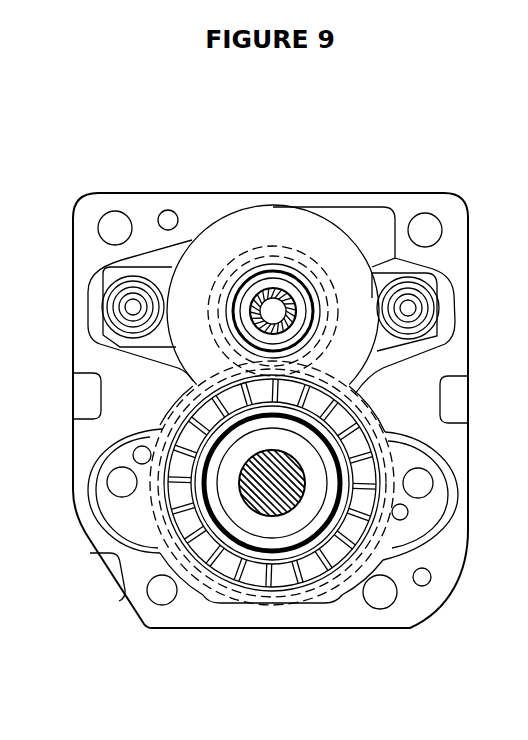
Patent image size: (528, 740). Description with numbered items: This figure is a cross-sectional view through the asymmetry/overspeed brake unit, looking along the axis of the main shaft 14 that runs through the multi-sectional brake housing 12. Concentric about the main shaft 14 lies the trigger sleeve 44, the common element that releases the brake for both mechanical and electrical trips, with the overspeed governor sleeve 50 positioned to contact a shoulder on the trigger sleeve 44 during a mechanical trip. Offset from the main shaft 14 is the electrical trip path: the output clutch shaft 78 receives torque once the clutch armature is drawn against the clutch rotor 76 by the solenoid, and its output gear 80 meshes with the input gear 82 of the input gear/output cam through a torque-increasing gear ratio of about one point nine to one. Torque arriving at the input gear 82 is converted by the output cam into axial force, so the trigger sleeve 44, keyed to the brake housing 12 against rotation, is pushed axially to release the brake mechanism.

The brake housing 12 is at (457, 227).
The main shaft 14 is at (279, 501).
The trigger sleeve 44 is at (315, 562).
The overspeed governor sleeve 50 is at (262, 585).
The clutch rotor 76 is at (222, 242).
The output clutch shaft 78 is at (263, 289).
The output gear 80 is at (298, 263).
The input gear 82 is at (152, 497).